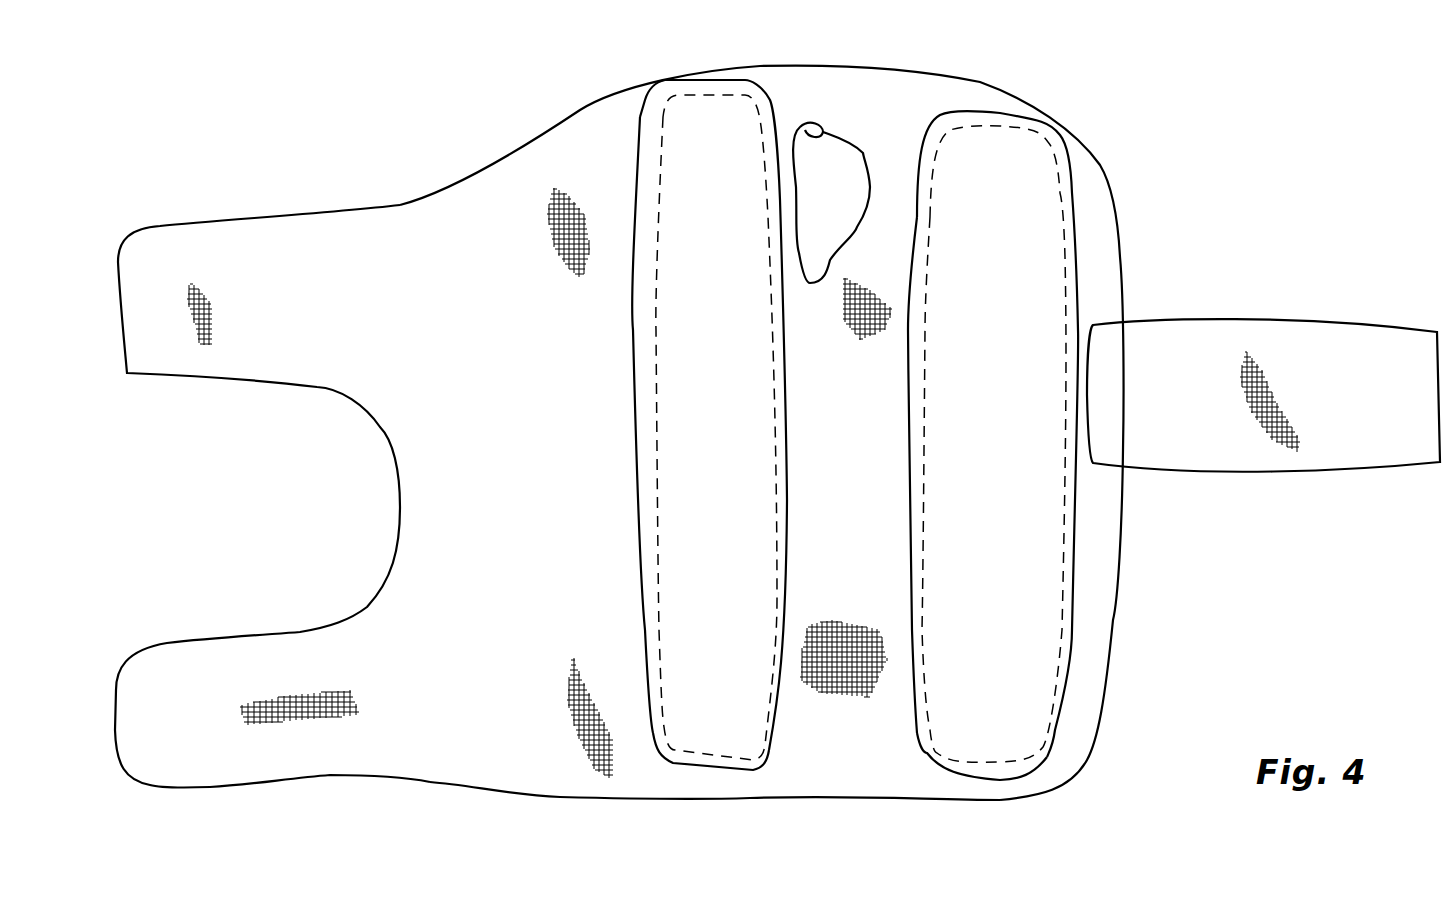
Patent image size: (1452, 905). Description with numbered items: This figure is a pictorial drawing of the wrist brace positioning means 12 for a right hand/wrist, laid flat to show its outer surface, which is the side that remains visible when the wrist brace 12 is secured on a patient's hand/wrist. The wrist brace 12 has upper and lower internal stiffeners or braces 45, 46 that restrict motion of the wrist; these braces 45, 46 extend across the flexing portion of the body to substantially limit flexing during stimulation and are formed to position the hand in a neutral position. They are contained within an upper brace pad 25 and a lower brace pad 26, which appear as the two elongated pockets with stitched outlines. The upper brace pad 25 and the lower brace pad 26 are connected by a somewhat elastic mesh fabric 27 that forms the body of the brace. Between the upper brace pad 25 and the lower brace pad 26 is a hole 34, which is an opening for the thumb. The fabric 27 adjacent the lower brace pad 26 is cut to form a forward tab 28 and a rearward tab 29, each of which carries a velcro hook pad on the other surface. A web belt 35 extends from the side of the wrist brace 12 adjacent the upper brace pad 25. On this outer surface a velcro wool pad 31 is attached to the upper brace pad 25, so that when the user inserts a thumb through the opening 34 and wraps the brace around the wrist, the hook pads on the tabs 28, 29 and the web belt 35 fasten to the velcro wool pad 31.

The wrist brace positioning means 12 is at (917, 65).
The upper brace pad 25 is at (933, 753).
The lower brace pad 26 is at (760, 763).
The elastic mesh fabric 27 is at (518, 768).
The forward tab 28 is at (187, 233).
The rearward tab 29 is at (183, 767).
The velcro wool pad 31 is at (978, 691).
The hole 34 is at (807, 123).
The web belt 35 is at (1253, 453).
The upper internal stiffener 45 is at (1053, 687).
The lower internal stiffener 46 is at (677, 750).